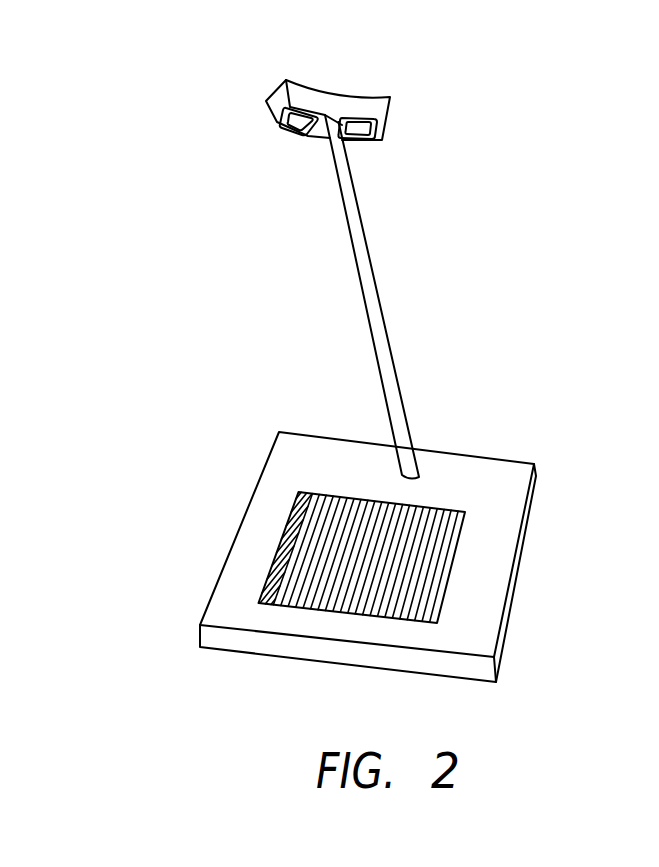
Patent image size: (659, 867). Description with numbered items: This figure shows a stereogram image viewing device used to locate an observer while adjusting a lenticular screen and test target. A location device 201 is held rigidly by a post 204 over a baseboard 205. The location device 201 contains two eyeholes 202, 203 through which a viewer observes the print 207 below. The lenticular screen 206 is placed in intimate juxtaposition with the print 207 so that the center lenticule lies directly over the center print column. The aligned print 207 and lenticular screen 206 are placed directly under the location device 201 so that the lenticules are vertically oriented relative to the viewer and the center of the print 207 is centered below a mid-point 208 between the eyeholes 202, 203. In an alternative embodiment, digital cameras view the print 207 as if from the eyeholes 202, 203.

The location device 201 is at (385, 93).
The eyehole 202 is at (295, 120).
The eyehole 203 is at (383, 140).
The post 204 is at (376, 304).
The baseboard 205 is at (528, 522).
The lenticular screen 206 is at (448, 595).
The print 207 is at (267, 577).
The mid-point 208 is at (328, 117).